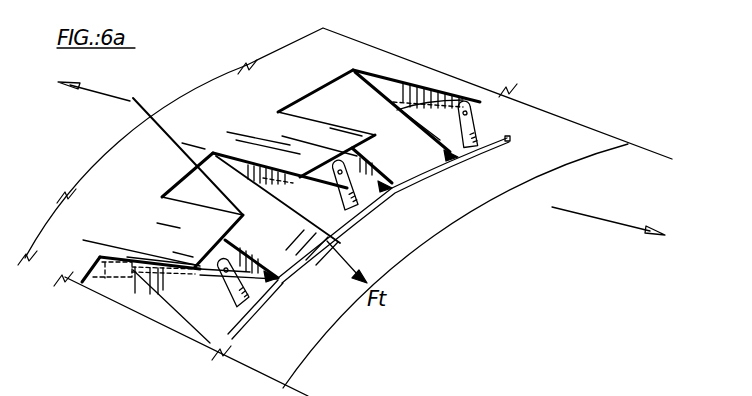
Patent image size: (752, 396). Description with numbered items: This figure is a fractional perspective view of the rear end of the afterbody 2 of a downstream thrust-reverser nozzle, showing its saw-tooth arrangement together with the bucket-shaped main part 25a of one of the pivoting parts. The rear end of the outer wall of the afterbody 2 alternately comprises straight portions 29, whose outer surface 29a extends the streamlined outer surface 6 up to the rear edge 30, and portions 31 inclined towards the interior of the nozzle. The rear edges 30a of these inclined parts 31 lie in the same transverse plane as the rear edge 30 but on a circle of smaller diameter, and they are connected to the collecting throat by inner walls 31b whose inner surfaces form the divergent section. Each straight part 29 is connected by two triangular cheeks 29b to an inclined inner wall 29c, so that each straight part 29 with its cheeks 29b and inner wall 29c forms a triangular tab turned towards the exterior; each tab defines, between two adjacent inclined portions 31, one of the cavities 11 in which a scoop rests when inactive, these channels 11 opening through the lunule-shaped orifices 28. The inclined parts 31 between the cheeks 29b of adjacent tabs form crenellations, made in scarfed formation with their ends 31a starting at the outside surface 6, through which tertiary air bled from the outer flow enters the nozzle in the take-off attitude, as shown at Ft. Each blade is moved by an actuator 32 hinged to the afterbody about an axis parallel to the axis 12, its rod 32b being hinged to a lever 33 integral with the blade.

The afterbody 2 is at (278, 43).
The outer surface 6 is at (200, 99).
The cavity 11 is at (193, 297).
The axis 12 is at (509, 140).
The main part 25a is at (488, 273).
The lunule 28 is at (597, 138).
The straight portion 29 is at (140, 272).
The outer surface 29a is at (388, 58).
The triangular cheek 29b is at (423, 102).
The inclined inner wall 29c is at (296, 189).
The rear edge 30 is at (482, 98).
The rear edge 30a is at (327, 247).
The inclined portion 31 is at (422, 183).
The end 31a is at (332, 92).
The inner wall 31b is at (373, 171).
The actuator 32 is at (97, 280).
The rod 32b is at (137, 273).
The lever 33 is at (478, 124).